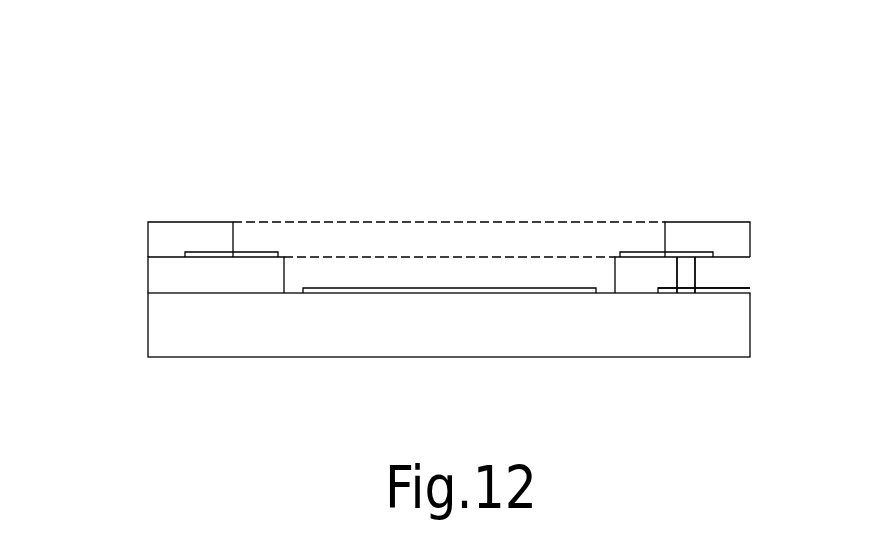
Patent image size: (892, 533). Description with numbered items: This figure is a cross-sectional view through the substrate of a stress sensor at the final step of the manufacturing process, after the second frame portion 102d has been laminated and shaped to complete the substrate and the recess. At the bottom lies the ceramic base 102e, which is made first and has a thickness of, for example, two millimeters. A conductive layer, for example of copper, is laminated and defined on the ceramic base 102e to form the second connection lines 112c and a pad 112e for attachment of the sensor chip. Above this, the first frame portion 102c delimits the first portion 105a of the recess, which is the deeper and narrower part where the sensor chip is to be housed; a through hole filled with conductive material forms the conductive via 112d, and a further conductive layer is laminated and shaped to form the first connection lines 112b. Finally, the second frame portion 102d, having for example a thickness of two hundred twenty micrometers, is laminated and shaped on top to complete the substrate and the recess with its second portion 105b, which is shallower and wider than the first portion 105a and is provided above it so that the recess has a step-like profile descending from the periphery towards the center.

The first frame portion 102c is at (158, 283).
The second frame portion 102d is at (163, 238).
The ceramic base 102e is at (158, 347).
The first portion of the recess 105a is at (424, 278).
The second portion of the recess 105b is at (282, 238).
The first connection lines 112b is at (250, 252).
The second connection lines 112c is at (735, 291).
The conductive via 112d is at (690, 275).
The pad 112e is at (513, 290).